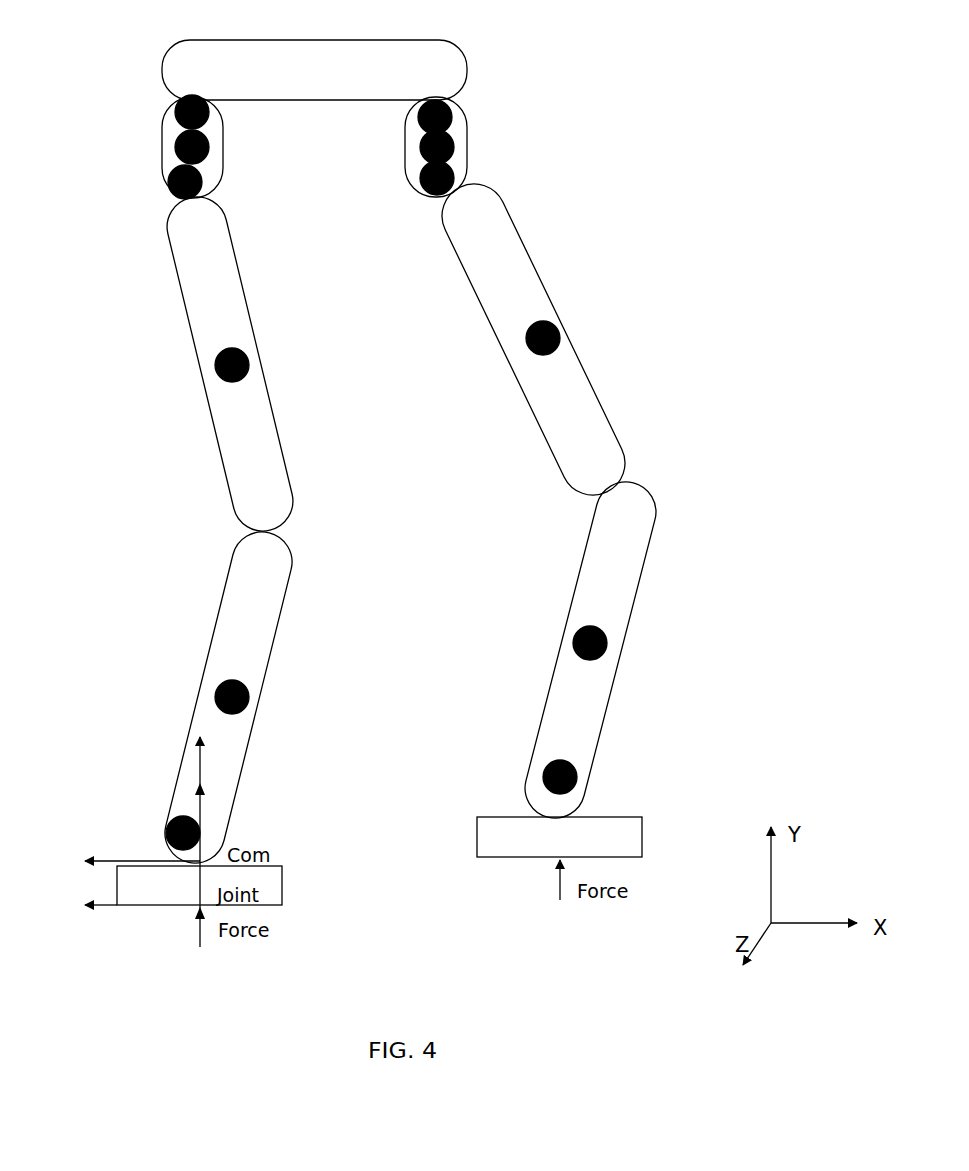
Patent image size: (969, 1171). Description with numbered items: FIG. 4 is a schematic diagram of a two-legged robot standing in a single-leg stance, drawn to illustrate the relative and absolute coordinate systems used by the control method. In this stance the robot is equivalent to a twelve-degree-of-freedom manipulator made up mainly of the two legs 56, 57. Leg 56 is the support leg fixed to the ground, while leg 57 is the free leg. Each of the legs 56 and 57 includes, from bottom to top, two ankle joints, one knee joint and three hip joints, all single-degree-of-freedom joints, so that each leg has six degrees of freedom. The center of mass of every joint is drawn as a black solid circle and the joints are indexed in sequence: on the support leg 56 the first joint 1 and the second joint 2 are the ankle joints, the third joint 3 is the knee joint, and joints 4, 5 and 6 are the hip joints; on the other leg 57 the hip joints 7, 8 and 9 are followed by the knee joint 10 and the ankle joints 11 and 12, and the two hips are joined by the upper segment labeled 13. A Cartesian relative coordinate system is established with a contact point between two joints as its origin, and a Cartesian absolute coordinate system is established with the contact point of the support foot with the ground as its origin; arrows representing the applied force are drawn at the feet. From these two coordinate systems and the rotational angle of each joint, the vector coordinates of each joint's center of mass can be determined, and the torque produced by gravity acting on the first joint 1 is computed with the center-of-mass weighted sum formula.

The leg 56 is at (255, 448).
The leg 57 is at (577, 423).
The first joint 1 is at (165, 833).
The joint i=2 (left knee) 2 is at (201, 697).
The joint i=3 (left hip) 3 is at (201, 367).
The joint i= 4 is at (159, 182).
The joint i= 5 is at (167, 147).
The joint i= 6 is at (167, 112).
The joint i= 7 is at (476, 117).
The joint i= 8 is at (477, 179).
The joint i= 9 is at (477, 147).
The joint i=10 (right hip) 10 is at (591, 338).
The joint i=11 (right knee) 11 is at (634, 643).
The joint i=12 (right ankle) 12 is at (615, 777).
The pelvis link i= 13 is at (314, 56).